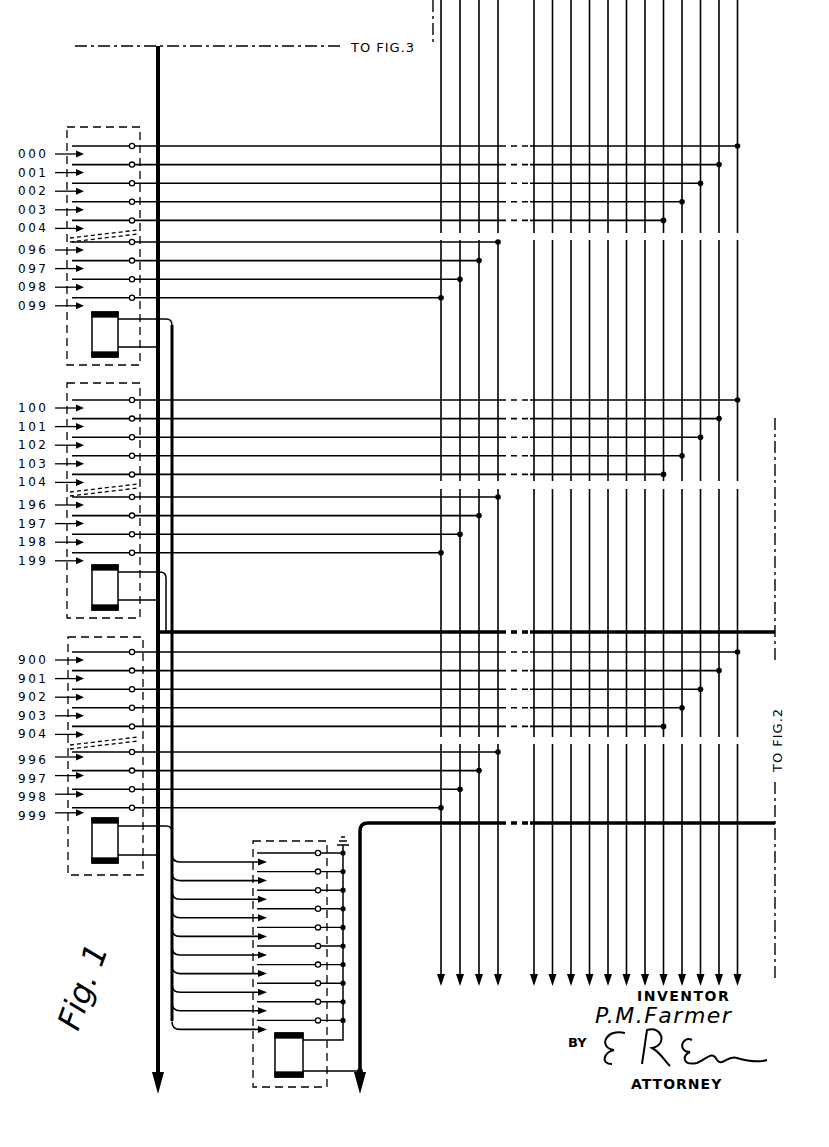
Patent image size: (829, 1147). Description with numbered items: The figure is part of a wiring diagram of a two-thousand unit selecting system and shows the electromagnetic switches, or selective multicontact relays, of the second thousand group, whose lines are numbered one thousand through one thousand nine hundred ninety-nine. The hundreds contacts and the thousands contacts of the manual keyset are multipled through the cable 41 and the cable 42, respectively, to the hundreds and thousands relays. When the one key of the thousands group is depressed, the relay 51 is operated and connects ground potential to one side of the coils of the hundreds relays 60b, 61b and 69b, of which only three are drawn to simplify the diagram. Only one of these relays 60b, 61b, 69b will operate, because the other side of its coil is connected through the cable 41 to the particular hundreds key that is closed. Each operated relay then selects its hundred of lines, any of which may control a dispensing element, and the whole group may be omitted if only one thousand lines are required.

The cable 41 is at (160, 86).
The cable 42 is at (742, 824).
The relay 51 is at (253, 1053).
The hundreds relay 60b is at (66, 342).
The hundreds relay 61b is at (66, 598).
The hundreds relay 69b is at (67, 852).